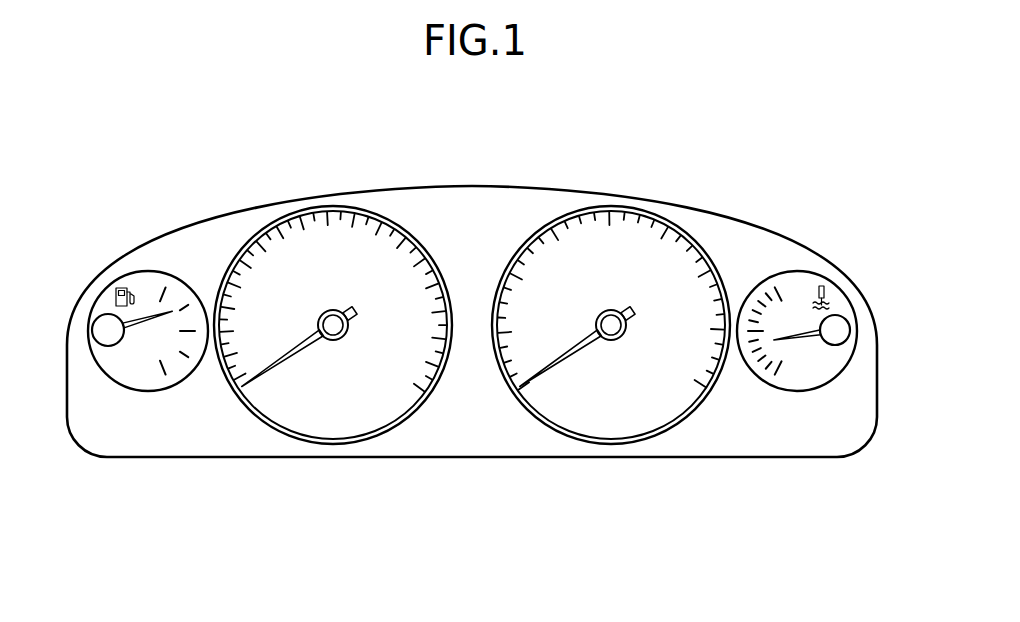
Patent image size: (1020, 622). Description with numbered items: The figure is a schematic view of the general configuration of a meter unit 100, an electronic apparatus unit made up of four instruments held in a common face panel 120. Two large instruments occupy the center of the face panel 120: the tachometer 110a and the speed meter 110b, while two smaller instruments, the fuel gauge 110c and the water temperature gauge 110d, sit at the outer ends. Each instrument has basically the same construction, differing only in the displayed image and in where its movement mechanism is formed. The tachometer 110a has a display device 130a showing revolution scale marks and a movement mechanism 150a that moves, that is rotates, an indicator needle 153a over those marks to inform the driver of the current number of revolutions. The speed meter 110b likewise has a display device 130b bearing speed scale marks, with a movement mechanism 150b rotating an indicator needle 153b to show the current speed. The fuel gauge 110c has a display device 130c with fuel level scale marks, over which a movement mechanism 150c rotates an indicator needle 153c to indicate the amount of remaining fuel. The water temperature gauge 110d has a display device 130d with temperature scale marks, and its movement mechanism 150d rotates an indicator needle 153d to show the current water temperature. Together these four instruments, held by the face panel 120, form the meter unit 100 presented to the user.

The meter unit 100 is at (714, 151).
The tachometer 110a is at (644, 206).
The speed meter 110b is at (364, 205).
The fuel gauge 110c is at (131, 268).
The water temperature gauge 110d is at (816, 266).
The face panel 120 is at (708, 443).
The display device 130a is at (631, 410).
The display device 130b is at (349, 410).
The display device 130c is at (119, 365).
The display device 130d is at (825, 365).
The movement mechanism 150a is at (605, 306).
The movement mechanism 150b is at (329, 306).
The movement mechanism 150c is at (100, 310).
The movement mechanism 150d is at (848, 311).
The indicator needle 153a is at (578, 350).
The indicator needle 153b is at (297, 350).
The indicator needle 153c is at (156, 312).
The indicator needle 153d is at (790, 330).